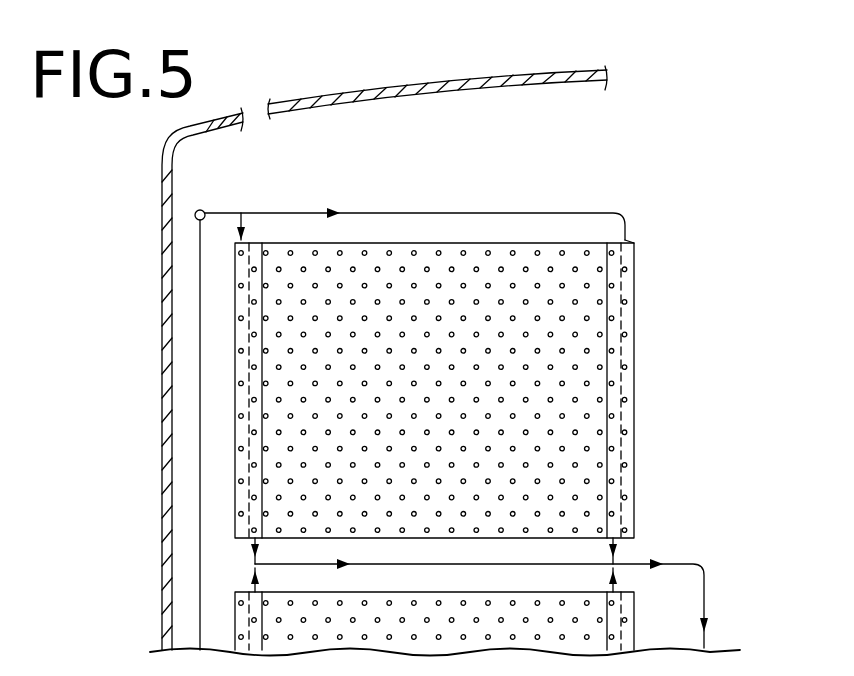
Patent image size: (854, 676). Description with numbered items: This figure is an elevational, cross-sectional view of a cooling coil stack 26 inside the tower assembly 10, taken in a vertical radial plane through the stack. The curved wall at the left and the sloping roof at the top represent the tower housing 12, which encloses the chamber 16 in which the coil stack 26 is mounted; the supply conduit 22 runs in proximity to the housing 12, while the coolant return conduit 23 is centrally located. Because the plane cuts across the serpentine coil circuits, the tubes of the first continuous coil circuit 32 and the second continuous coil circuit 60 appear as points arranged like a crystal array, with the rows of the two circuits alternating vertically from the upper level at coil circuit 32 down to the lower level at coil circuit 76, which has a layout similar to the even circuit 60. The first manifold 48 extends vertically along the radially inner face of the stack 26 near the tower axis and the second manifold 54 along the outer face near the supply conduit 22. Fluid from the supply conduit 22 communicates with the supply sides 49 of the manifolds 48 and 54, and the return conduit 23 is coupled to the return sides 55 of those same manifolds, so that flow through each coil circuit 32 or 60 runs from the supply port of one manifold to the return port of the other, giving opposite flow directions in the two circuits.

The tower assembly 10 is at (386, 86).
The tower housing 12 is at (163, 194).
The chamber 16 is at (180, 258).
The supply conduit 22 is at (199, 338).
The coolant return conduit 23 is at (704, 576).
The cooling coil stack 26 is at (455, 352).
The first continuous coil circuit 32 is at (275, 256).
The first manifold 48 is at (633, 238).
The supply sides of manifolds 49 is at (627, 248).
The second manifold 54 is at (235, 497).
The return sides of manifolds 55 is at (258, 244).
The second continuous coil circuit 60 is at (598, 268).
The lower coil circuit 76 is at (603, 530).